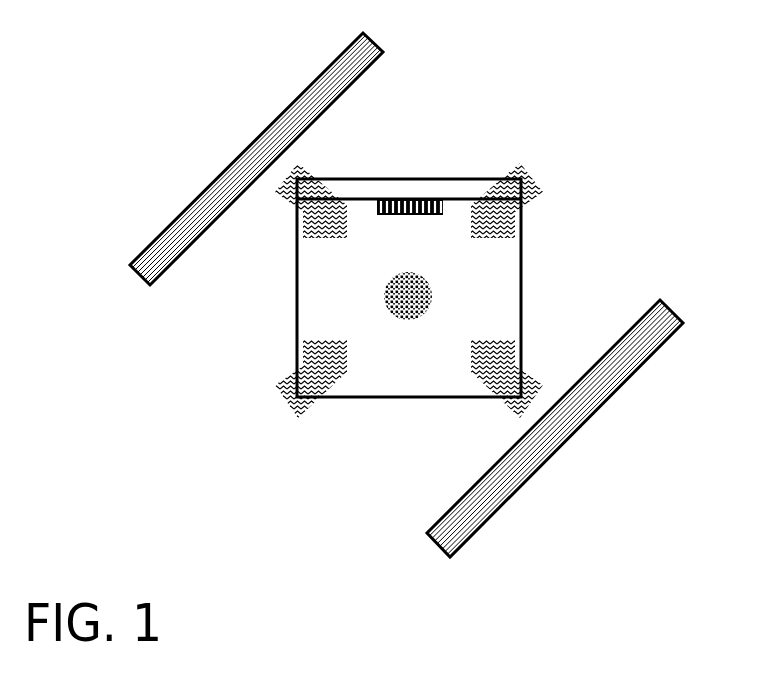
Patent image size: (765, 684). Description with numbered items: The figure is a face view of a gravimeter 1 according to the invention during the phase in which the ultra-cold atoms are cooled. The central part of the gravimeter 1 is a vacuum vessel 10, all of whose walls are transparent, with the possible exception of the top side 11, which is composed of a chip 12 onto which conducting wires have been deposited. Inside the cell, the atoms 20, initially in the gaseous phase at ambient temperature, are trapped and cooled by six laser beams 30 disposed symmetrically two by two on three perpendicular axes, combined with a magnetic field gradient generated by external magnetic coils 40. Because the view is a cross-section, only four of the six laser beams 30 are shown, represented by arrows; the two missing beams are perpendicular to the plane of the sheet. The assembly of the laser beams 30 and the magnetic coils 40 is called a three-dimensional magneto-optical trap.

The gravimeter 1 is at (184, 362).
The vacuum vessel 10 is at (522, 257).
The top side 11 is at (420, 190).
The chip 12 is at (392, 216).
The atoms 20 is at (432, 296).
The laser beams 30 is at (307, 410).
The external magnetic coils 40 is at (625, 373).